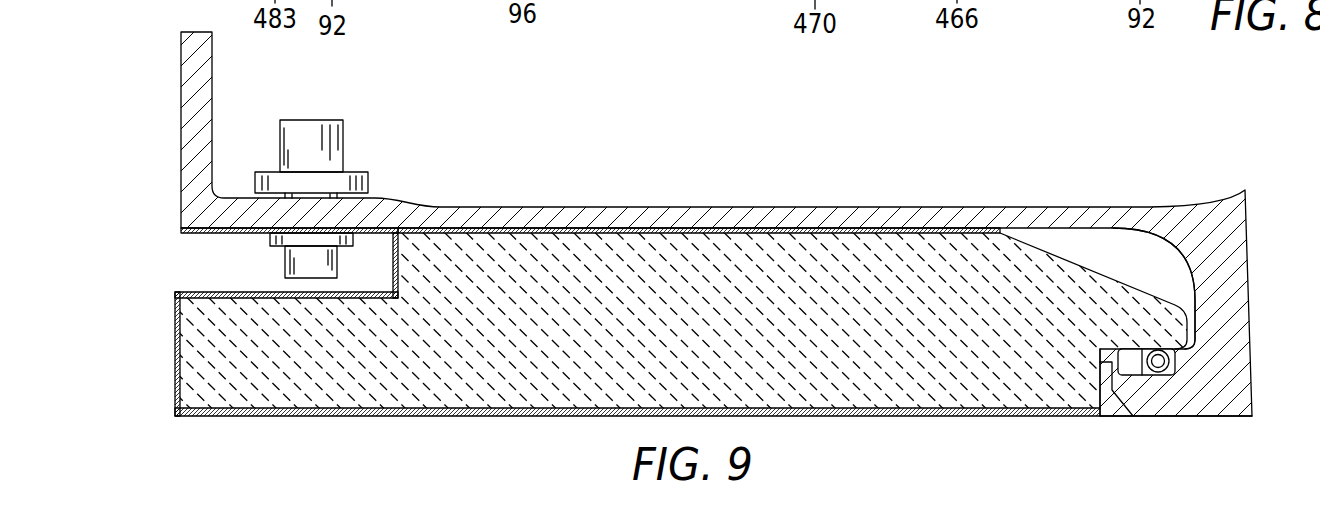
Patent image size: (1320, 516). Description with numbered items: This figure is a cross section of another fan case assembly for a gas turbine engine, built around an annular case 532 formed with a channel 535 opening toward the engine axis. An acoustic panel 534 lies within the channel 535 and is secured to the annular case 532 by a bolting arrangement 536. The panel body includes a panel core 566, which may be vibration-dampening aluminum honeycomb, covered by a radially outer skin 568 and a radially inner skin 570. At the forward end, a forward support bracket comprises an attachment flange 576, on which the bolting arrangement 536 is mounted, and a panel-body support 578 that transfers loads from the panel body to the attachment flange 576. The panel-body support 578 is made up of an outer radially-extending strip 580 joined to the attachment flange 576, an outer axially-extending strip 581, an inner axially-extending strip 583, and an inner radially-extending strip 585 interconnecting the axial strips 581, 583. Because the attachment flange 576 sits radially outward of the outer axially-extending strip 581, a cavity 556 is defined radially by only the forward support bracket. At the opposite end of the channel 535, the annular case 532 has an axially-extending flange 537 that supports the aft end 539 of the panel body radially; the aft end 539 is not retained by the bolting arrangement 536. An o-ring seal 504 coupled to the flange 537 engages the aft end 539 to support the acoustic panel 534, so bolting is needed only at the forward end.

The o-ring seal 504 is at (1185, 358).
The annular case 532 is at (1120, 182).
The acoustic panel 534 is at (415, 433).
The channel 535 is at (1123, 250).
The bolting arrangement 536 is at (365, 95).
The axially-extending flange 537 is at (1148, 420).
The aft end 539 is at (1132, 277).
The cavity 556 is at (193, 258).
The panel core 566 is at (991, 368).
The radially outer skin 568 is at (903, 228).
The radially inner skin 570 is at (912, 408).
The attachment flange 576 is at (205, 233).
The panel-body support 578 is at (143, 399).
The outer radially-extending strip 580 is at (397, 262).
The outer axially-extending strip 581 is at (198, 292).
The inner axially-extending strip 583 is at (245, 412).
The inner radially-extending strip 585 is at (178, 335).